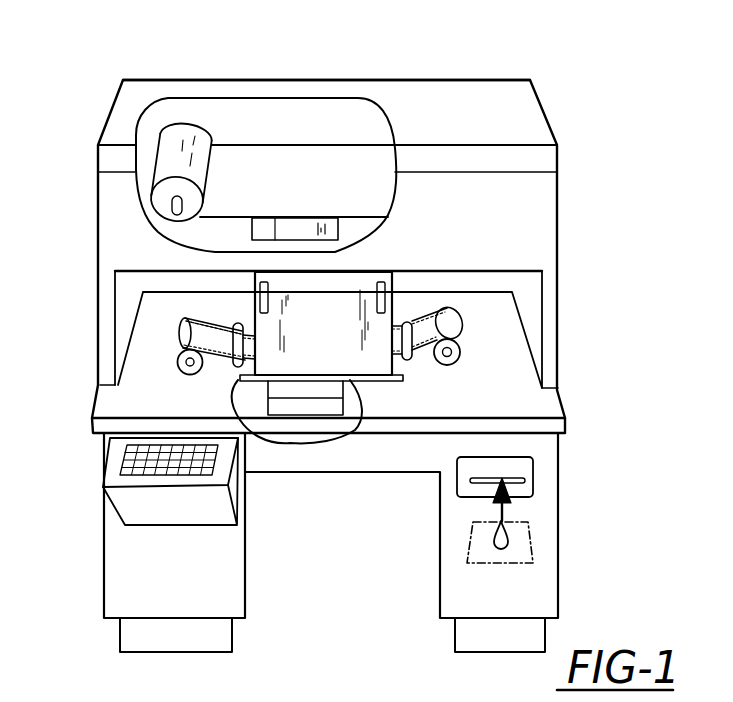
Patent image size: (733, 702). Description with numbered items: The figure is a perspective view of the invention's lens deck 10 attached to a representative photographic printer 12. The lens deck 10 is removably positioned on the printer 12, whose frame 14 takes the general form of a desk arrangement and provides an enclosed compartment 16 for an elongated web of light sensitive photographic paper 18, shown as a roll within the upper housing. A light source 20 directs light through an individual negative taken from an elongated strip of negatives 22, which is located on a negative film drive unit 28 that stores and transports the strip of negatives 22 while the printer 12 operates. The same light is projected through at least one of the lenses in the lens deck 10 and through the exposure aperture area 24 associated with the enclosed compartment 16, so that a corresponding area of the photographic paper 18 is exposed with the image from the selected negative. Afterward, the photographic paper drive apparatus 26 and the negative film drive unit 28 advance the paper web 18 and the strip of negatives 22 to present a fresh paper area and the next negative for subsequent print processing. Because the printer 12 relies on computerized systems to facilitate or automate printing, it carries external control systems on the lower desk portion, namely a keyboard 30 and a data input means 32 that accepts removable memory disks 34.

The lens deck 10 is at (334, 291).
The photographic printer 12 is at (498, 79).
The frame 14 is at (107, 348).
The enclosed compartment 16 is at (293, 127).
The photographic paper 18 is at (213, 156).
The light source 20 is at (300, 405).
The strip of negatives 22 is at (214, 352).
The exposure aperture area 24 is at (338, 229).
The photographic paper drive apparatus 26 is at (172, 204).
The negative film drive unit 28 is at (222, 313).
The keyboard 30 is at (105, 447).
The data input means 32 is at (473, 467).
The removable memory disks 34 is at (473, 524).